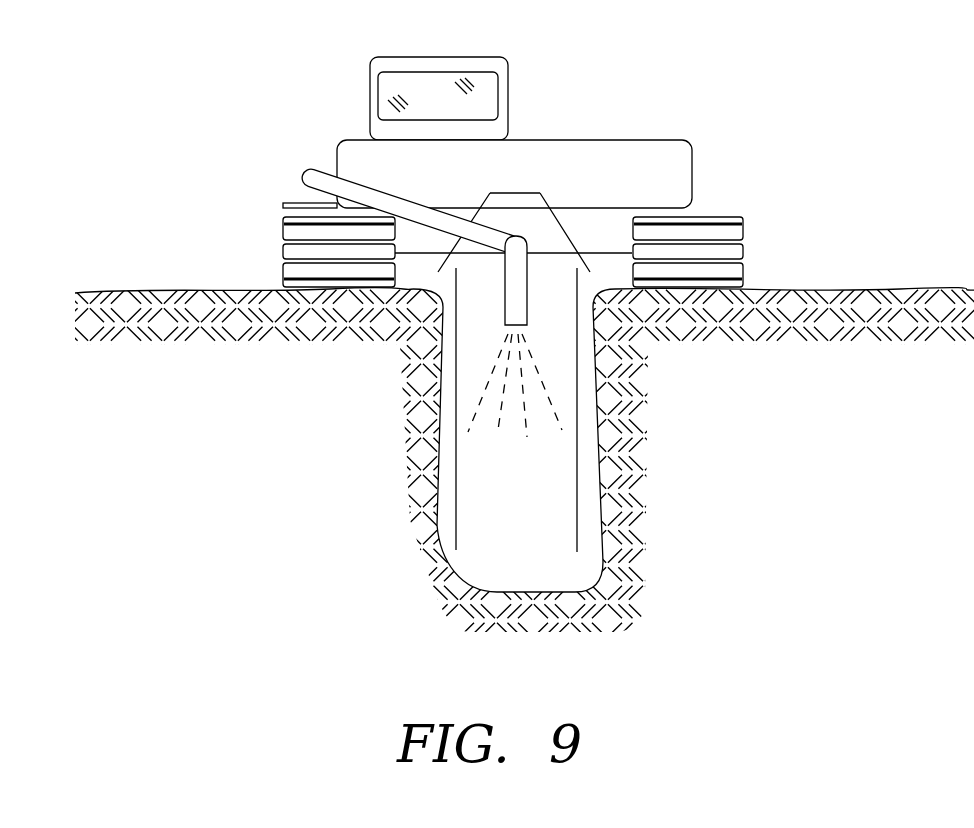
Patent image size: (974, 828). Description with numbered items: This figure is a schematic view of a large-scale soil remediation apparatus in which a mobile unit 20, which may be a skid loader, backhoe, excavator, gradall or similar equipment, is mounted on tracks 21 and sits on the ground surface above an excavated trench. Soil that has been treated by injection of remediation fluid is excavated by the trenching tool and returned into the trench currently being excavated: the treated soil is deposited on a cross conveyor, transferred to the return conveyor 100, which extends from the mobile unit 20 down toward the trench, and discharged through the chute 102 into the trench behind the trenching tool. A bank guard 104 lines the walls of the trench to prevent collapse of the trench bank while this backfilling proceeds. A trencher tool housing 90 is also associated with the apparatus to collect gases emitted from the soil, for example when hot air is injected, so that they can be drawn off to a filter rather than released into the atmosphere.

The mobile unit 20 is at (549, 124).
The tracks 21 is at (283, 250).
The trencher tool housing 90 is at (548, 200).
The return conveyor 100 is at (323, 177).
The chute 102 is at (527, 305).
The bank guard 104 is at (455, 439).